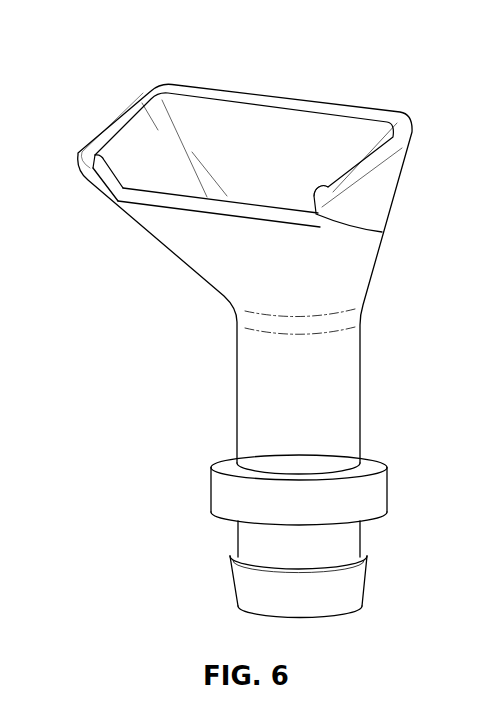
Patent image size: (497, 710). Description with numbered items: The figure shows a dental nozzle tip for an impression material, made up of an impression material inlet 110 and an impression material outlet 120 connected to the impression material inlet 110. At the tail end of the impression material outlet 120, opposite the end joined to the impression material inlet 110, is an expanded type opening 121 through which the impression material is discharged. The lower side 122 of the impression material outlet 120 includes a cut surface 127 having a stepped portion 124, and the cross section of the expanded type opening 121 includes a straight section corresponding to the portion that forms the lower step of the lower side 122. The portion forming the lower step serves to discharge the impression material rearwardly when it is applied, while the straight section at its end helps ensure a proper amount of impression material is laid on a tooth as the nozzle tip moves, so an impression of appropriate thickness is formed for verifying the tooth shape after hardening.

The impression material inlet 110 is at (361, 536).
The impression material outlet 120 is at (242, 244).
The expanded type opening 121 is at (263, 117).
The lower side 122 is at (225, 260).
The stepped portion 124 is at (102, 174).
The cut surface 127 is at (183, 202).